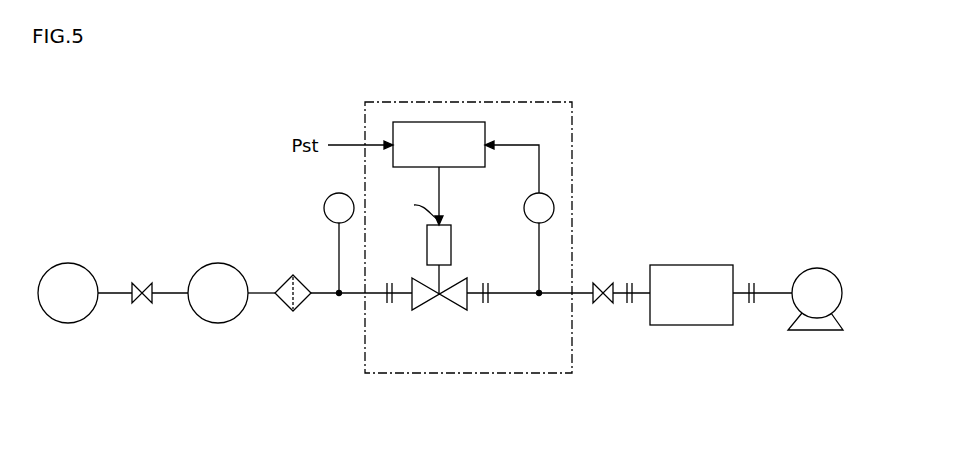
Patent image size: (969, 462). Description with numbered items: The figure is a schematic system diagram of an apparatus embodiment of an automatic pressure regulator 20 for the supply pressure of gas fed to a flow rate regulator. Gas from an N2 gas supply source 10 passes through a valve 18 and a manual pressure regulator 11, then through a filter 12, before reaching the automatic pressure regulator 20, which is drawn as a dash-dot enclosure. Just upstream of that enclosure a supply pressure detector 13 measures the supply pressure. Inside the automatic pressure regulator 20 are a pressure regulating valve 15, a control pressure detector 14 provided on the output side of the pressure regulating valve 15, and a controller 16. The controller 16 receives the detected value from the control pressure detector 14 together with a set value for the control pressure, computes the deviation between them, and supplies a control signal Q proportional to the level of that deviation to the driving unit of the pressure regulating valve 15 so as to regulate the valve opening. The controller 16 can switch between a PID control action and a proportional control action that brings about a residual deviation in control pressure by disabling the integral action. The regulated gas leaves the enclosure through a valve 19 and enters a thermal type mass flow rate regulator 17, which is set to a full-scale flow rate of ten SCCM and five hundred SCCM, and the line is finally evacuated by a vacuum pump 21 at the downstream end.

The N2 gas supply source 10 is at (68, 263).
The manual pressure regulator 11 is at (218, 263).
The filter 12 is at (300, 283).
The supply pressure detector 13 is at (324, 208).
The control pressure detector 14 is at (524, 208).
The pressure regulating valve 15 is at (425, 300).
The controller 16 is at (440, 122).
The thermal type mass flow rate regulator 17 is at (692, 265).
The valve 18 is at (142, 283).
The valve 19 is at (603, 283).
The automatic pressure regulator 20 is at (465, 373).
The vacuum pump 21 is at (817, 268).